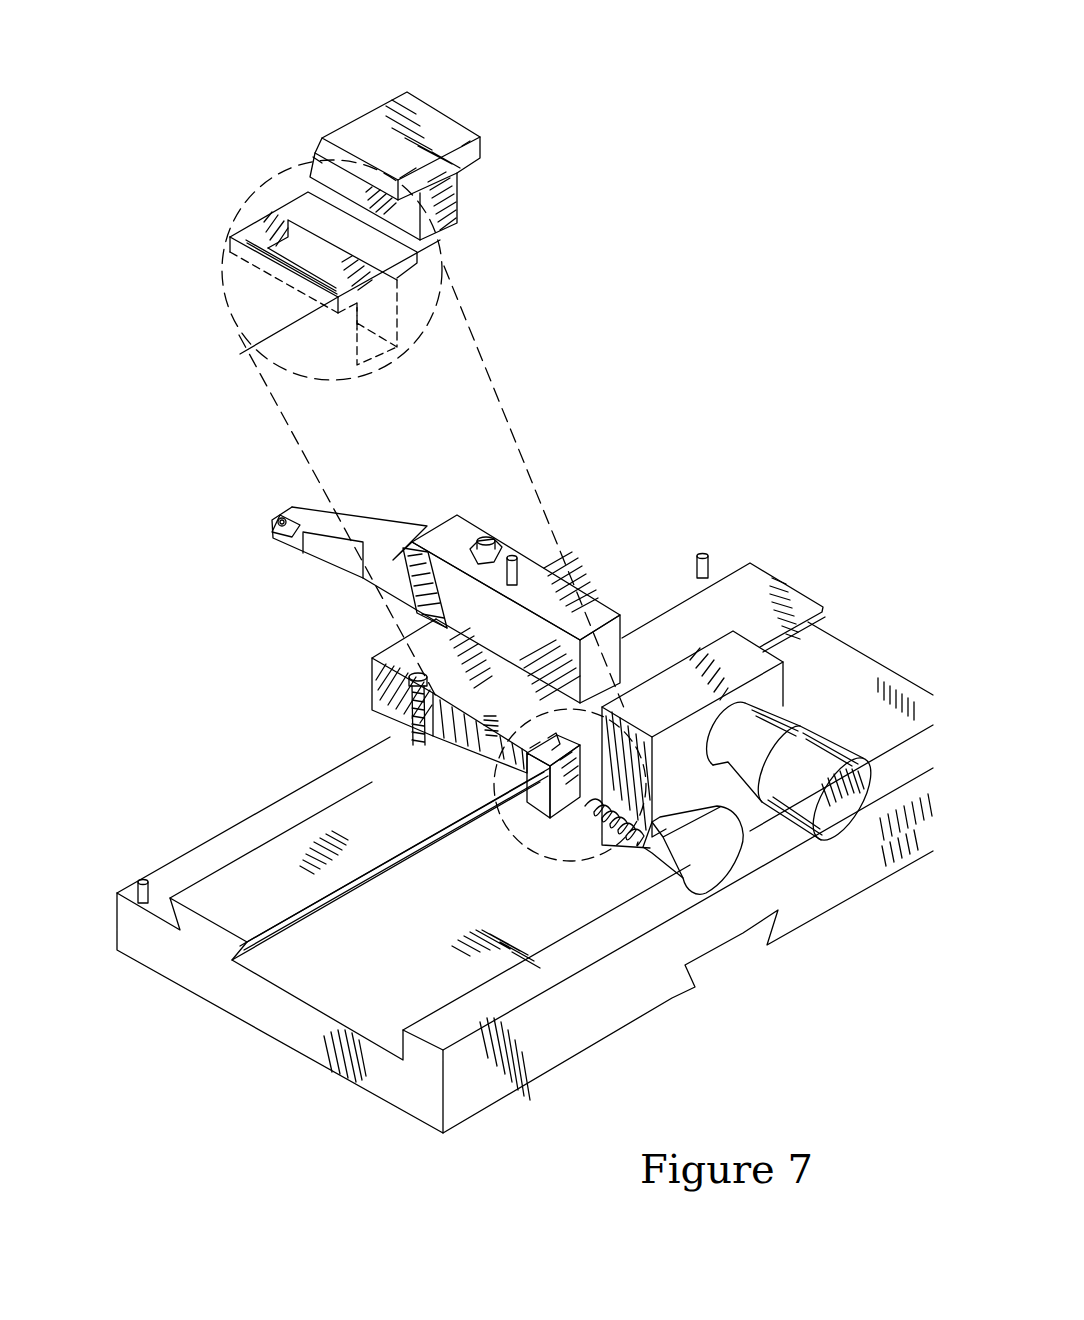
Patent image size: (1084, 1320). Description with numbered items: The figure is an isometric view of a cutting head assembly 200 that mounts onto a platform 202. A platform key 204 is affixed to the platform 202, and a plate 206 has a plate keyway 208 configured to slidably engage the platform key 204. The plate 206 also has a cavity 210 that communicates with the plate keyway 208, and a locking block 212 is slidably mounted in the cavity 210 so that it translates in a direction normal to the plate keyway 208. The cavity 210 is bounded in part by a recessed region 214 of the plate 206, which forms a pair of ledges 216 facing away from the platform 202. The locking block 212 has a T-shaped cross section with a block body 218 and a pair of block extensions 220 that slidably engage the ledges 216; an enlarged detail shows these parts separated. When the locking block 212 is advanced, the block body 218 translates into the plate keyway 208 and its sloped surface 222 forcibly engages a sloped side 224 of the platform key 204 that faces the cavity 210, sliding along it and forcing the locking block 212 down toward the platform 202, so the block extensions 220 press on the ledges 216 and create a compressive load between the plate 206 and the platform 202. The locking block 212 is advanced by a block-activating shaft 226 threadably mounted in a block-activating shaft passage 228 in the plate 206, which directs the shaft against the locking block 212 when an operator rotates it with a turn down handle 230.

The cutting head assembly 200 is at (594, 498).
The platform 202 is at (292, 1048).
The platform key 204 is at (200, 929).
The plate 206 is at (365, 662).
The plate keyway 208 is at (455, 742).
The cavity 210 is at (368, 310).
The locking block 212 is at (352, 100).
The recessed region 214 is at (385, 262).
The ledges 216 is at (337, 300).
The block body 218 is at (462, 200).
The block extensions 220 is at (463, 152).
The sloped surface 222 is at (318, 163).
The sloped side 224 is at (262, 940).
The block-activating shaft 226 is at (597, 835).
The block-activating shaft passage 228 is at (652, 802).
The turn down handle 230 is at (703, 876).